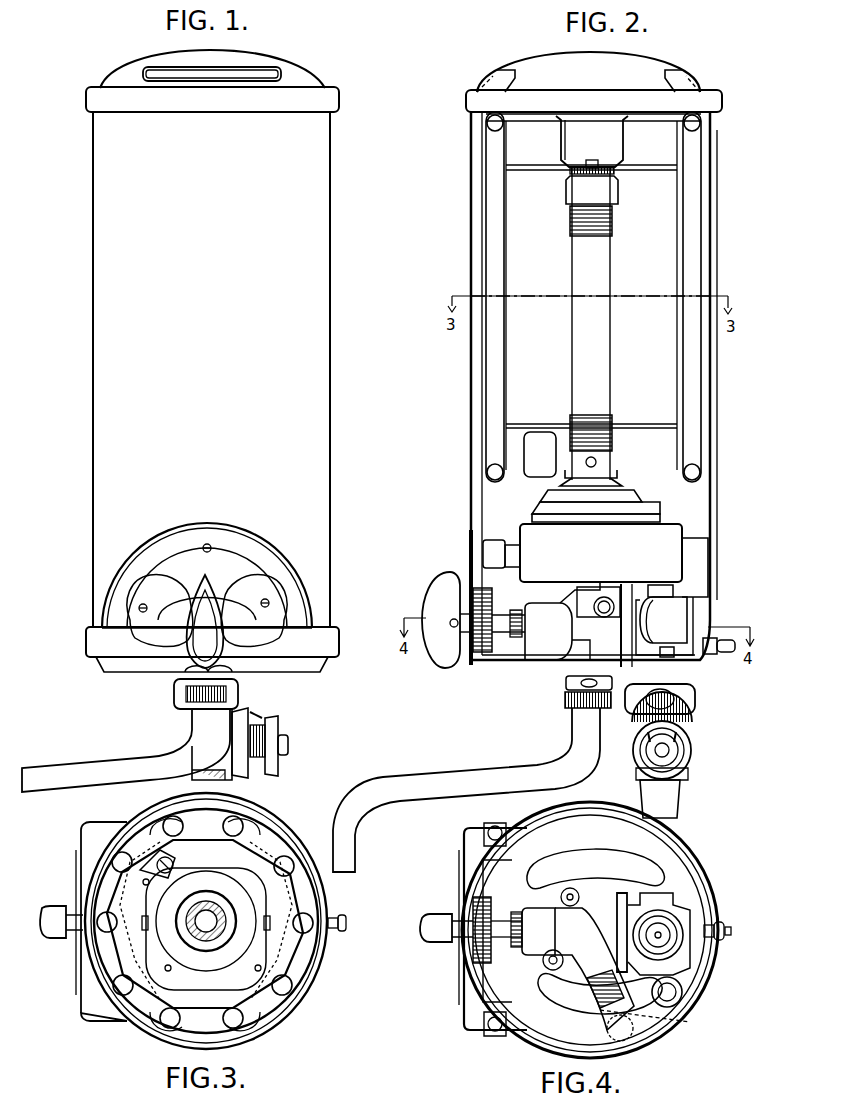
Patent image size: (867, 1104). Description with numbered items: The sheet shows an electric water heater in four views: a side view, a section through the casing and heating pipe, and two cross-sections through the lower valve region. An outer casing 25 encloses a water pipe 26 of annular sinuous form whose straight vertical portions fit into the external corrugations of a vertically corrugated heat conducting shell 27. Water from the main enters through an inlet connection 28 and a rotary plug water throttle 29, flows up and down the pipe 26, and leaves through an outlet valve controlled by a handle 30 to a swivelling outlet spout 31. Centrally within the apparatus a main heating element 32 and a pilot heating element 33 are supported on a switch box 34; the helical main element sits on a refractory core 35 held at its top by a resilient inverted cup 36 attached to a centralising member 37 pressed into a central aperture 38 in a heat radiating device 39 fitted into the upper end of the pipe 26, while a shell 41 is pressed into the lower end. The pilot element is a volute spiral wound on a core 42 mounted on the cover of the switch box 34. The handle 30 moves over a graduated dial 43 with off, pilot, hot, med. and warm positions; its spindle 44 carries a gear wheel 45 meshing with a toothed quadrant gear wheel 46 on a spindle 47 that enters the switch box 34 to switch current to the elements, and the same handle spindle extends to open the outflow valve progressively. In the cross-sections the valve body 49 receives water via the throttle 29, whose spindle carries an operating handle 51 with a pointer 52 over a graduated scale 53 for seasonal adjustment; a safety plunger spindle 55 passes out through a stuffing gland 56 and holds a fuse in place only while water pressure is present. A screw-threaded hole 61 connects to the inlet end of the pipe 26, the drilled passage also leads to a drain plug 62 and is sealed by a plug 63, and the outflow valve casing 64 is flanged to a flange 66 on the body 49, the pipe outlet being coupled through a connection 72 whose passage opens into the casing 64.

In FIG. 1, the outer casing 25 is at (330, 305).
In FIG. 2, the outer casing 25 is at (471, 205).
In FIG. 3, the outer casing 25 is at (327, 900).
In FIG. 4, the outer casing 25 is at (680, 870).
In FIG. 2, the water pipe 26 is at (490, 248).
In FIG. 3, the water pipe 26 is at (238, 818).
In FIG. 4, the water pipe 26 is at (655, 1018).
In FIG. 2, the heat conducting shell 27 is at (506, 333).
In FIG. 3, the heat conducting shell 27 is at (266, 830).
In FIG. 2, the inlet connection 28 is at (677, 805).
In FIG. 1, the water throttle 29 is at (288, 745).
In FIG. 2, the water throttle 29 is at (672, 752).
In FIG. 1, the handle 30 is at (198, 634).
In FIG. 2, the handle 30 is at (436, 658).
In FIG. 3, the handle 30 is at (58, 936).
In FIG. 4, the handle 30 is at (438, 942).
In FIG. 1, the outlet spout 31 is at (98, 760).
In FIG. 2, the outlet spout 31 is at (472, 772).
In FIG. 2, the main heating element 32 is at (612, 225).
In FIG. 2, the pilot heating element 33 is at (622, 486).
In FIG. 2, the switch box 34 is at (668, 548).
In FIG. 2, the refractory core 35 is at (610, 272).
In FIG. 3, the refractory core 35 is at (220, 935).
In FIG. 2, the resilient inverted cup 36 is at (618, 187).
In FIG. 2, the centralising member 37 is at (570, 138).
In FIG. 2, the central aperture 38 is at (623, 142).
In FIG. 2, the heat radiating device 39 is at (540, 160).
In FIG. 2, the shell 41 is at (510, 440).
In FIG. 3, the shell 41 is at (203, 840).
In FIG. 2, the core 42 is at (640, 508).
In FIG. 3, the core 42 is at (240, 890).
In FIG. 1, the dial 43 is at (228, 553).
In FIG. 2, the dial 43 is at (468, 562).
In FIG. 2, the spindle 44 is at (466, 640).
In FIG. 2, the gear wheel 45 is at (481, 652).
In FIG. 4, the gear wheel 45 is at (476, 960).
In FIG. 2, the toothed quadrant gear wheel 46 is at (483, 548).
In FIG. 2, the spindle 47 is at (512, 545).
In FIG. 2, the valve body 49 is at (676, 612).
In FIG. 1, the operating handle 51 is at (275, 723).
In FIG. 2, the operating handle 51 is at (636, 765).
In FIG. 1, the pointer 52 is at (262, 718).
In FIG. 2, the pointer 52 is at (690, 722).
In FIG. 1, the graduated scale 53 is at (245, 715).
In FIG. 2, the graduated scale 53 is at (690, 740).
In FIG. 4, the spindle 55 is at (666, 942).
In FIG. 2, the stuffing gland 56 is at (673, 595).
In FIG. 4, the stuffing gland 56 is at (682, 922).
In FIG. 4, the screw-threaded hole 61 is at (682, 995).
In FIG. 2, the drain plug 62 is at (673, 652).
In FIG. 4, the plug 63 is at (676, 900).
In FIG. 2, the valve casing 64 is at (578, 648).
In FIG. 4, the valve casing 64 is at (540, 912).
In FIG. 2, the flange 66 is at (626, 584).
In FIG. 4, the flange 66 is at (624, 893).
In FIG. 4, the connection 72 is at (583, 970).